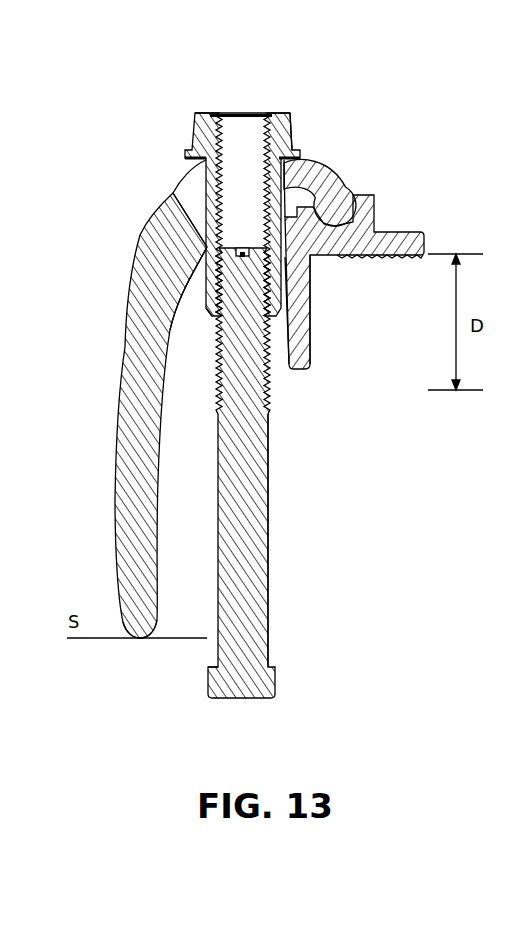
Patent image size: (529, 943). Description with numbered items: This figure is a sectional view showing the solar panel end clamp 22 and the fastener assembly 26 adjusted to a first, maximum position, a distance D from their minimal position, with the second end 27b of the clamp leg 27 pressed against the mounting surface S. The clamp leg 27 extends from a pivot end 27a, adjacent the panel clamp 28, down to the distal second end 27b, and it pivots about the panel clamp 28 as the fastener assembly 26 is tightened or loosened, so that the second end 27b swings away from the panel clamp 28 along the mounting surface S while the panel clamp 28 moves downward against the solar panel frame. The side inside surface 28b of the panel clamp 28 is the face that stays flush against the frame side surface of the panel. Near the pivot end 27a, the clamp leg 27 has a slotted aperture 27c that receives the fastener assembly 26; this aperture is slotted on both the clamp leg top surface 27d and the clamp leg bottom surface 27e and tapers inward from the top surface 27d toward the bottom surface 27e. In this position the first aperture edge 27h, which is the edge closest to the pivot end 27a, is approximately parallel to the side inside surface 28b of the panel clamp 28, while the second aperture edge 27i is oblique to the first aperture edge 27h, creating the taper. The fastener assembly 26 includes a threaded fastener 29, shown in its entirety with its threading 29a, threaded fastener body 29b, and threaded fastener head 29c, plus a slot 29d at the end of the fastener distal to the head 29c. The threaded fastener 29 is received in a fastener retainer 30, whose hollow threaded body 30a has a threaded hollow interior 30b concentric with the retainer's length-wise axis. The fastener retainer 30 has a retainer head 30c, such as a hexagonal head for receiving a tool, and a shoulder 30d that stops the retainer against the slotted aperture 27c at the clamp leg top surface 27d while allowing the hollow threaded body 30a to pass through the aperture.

The solar panel end clamp 22 is at (377, 252).
The fastener assembly 26 is at (273, 415).
The clamp leg 27 is at (133, 390).
The pivot end 27a is at (352, 196).
The second end 27b is at (160, 630).
The slotted aperture 27c is at (185, 175).
The clamp leg top surface 27d is at (323, 168).
The clamp leg bottom surface 27e is at (177, 297).
The first aperture edge 27h is at (294, 157).
The second aperture edge 27i is at (177, 201).
The panel clamp 28 is at (328, 323).
The side inside surface 28b is at (312, 278).
The threaded fastener 29 is at (273, 395).
The threading 29a is at (269, 375).
The threaded fastener body 29b is at (269, 530).
The threaded fastener head 29c is at (277, 675).
The slot 29d is at (242, 247).
The fastener retainer 30 is at (217, 206).
The hollow threaded body 30a is at (207, 316).
The threaded hollow interior 30b is at (257, 112).
The retainer head 30c is at (204, 112).
The shoulder 30d is at (185, 152).